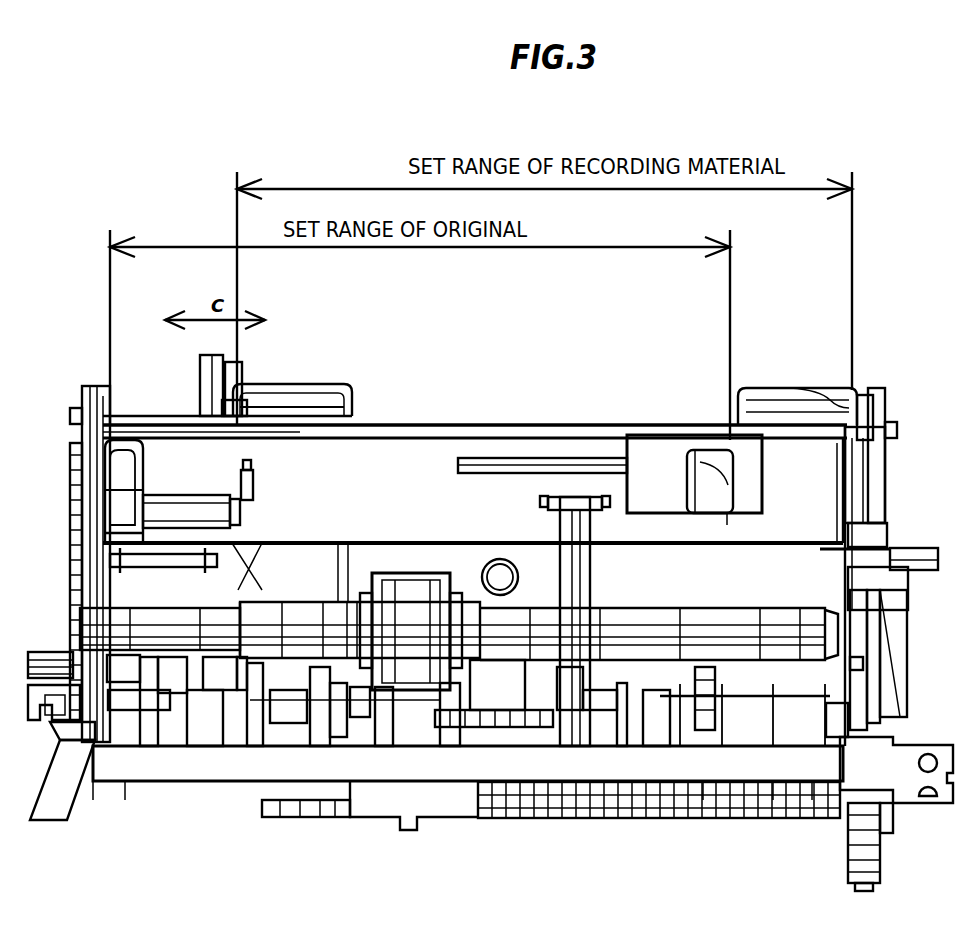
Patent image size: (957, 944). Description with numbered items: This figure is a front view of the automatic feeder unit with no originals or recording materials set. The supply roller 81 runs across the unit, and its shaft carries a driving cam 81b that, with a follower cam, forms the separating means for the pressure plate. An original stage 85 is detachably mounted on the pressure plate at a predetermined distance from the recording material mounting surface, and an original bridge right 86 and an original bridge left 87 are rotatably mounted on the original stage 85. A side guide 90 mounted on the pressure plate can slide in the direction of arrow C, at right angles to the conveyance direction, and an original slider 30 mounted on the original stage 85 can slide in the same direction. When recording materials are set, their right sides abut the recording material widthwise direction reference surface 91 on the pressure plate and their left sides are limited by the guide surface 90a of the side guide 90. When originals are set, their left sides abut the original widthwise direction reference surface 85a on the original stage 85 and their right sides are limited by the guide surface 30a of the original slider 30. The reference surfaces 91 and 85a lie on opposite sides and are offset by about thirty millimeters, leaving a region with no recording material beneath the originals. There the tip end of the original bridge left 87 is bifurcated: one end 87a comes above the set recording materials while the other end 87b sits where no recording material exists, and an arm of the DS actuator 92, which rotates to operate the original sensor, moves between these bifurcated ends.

The original slider 30 is at (650, 425).
The guide surface 30a is at (700, 425).
The supply roller 81 is at (411, 733).
The driving cam 81b is at (87, 700).
The original stage 85 is at (374, 425).
The original widthwise direction reference surface 85a is at (110, 420).
The original bridge right 86 is at (582, 425).
The original bridge left 87 is at (262, 548).
The bifurcated end 87a is at (243, 700).
The other end 87b is at (117, 700).
The side guide 90 is at (290, 394).
The guide surface 90a is at (240, 376).
The recording material widthwise direction reference surface 91 is at (812, 390).
The DS actuator 92 is at (180, 558).